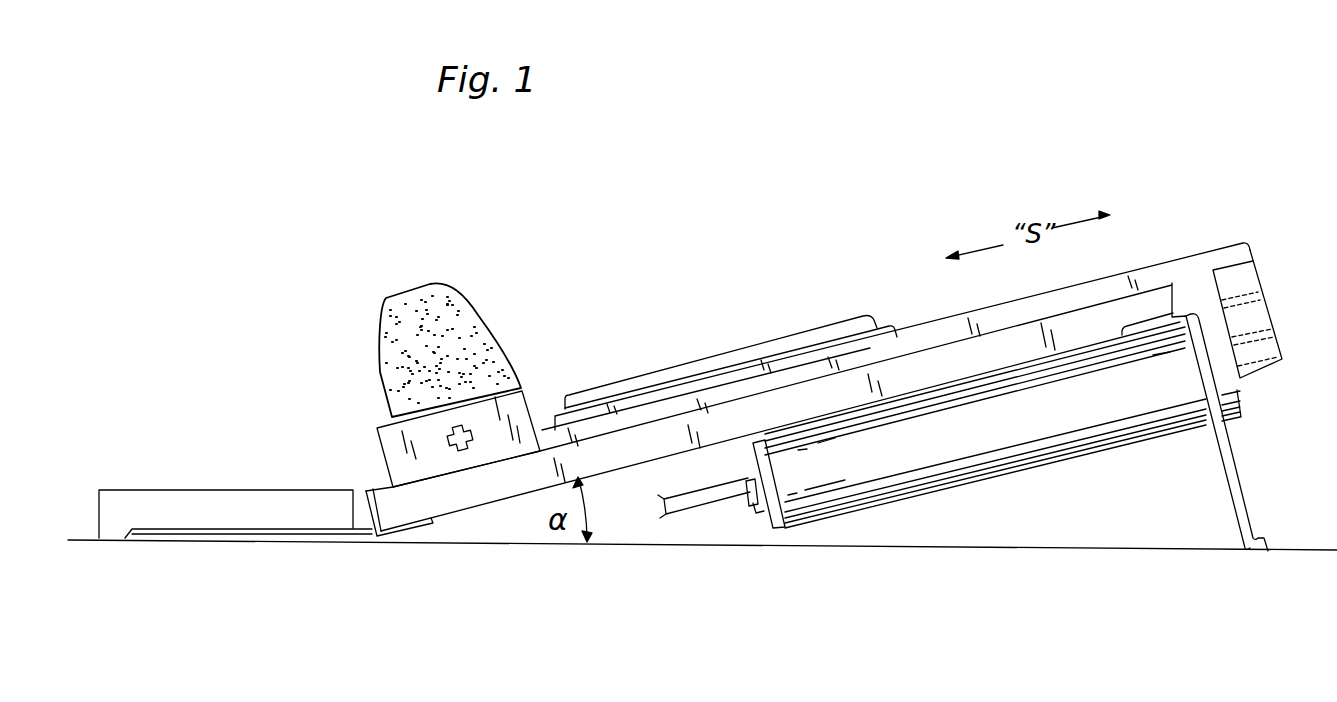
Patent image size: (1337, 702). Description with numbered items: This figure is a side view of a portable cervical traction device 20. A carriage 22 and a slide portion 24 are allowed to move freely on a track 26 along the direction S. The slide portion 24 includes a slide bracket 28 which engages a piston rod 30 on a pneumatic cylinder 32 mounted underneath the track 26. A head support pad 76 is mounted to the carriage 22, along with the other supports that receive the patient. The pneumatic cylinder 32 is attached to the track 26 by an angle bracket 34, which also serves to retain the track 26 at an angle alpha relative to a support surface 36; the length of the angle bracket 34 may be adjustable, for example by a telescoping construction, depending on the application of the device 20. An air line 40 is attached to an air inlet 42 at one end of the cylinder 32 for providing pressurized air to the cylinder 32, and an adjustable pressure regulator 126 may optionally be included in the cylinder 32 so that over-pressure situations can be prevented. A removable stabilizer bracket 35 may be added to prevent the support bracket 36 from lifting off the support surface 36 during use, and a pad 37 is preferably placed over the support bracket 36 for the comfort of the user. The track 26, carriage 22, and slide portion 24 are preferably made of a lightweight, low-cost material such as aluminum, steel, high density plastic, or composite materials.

The portable cervical traction device 20 is at (1170, 200).
The carriage 22 is at (516, 400).
The slide portion 24 is at (948, 317).
The track 26 is at (478, 496).
The slide bracket 28 is at (1240, 286).
The piston rod 30 is at (1262, 351).
The pneumatic cylinder 32 is at (864, 494).
The angle bracket 34 is at (1222, 460).
The removable stabilizer bracket 35 is at (246, 540).
The support surface 36 is at (972, 546).
The pad 37 is at (212, 492).
The air line 40 is at (695, 508).
The air inlet 42 is at (758, 494).
The head support pad 76 is at (748, 358).
The adjustable pressure regulator 126 is at (762, 520).